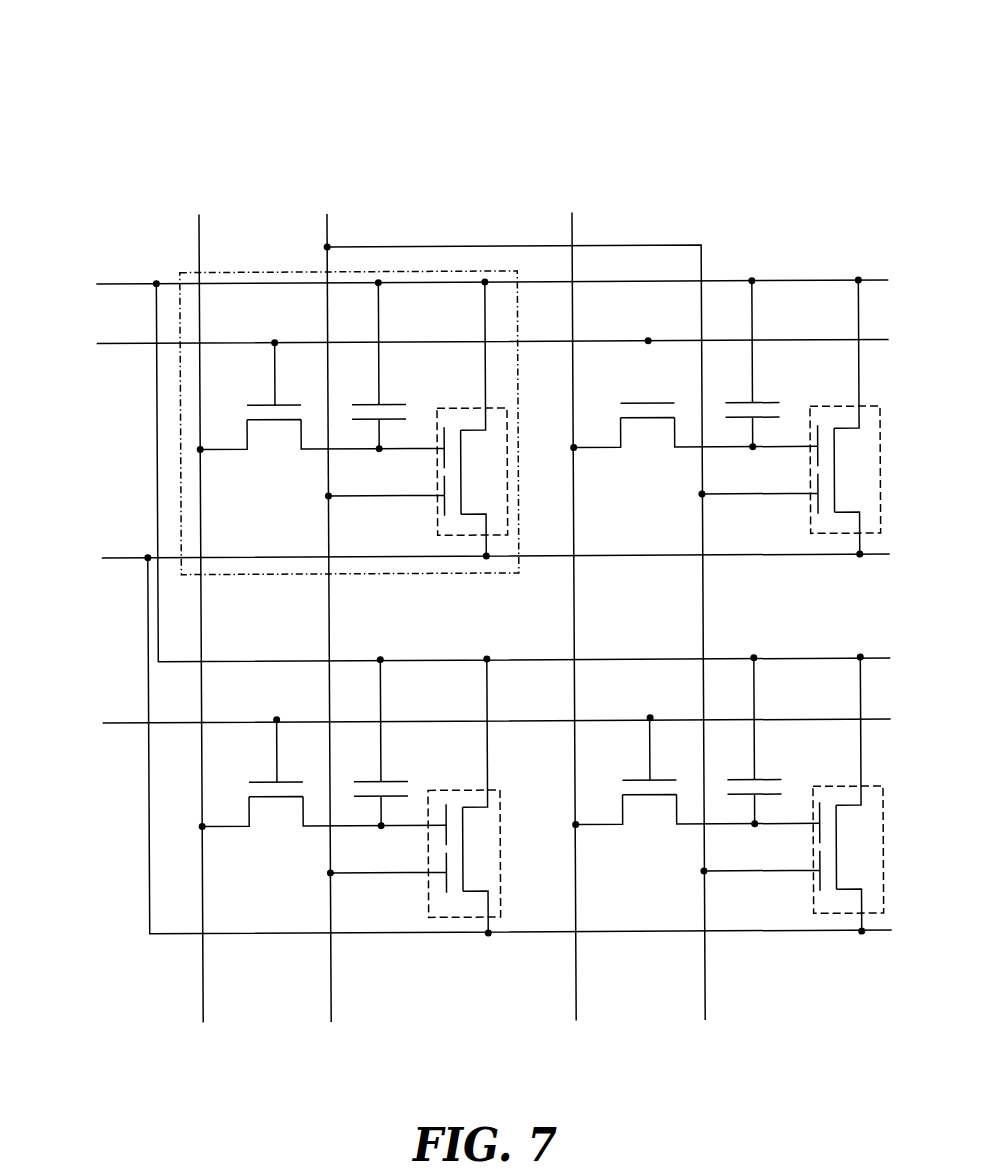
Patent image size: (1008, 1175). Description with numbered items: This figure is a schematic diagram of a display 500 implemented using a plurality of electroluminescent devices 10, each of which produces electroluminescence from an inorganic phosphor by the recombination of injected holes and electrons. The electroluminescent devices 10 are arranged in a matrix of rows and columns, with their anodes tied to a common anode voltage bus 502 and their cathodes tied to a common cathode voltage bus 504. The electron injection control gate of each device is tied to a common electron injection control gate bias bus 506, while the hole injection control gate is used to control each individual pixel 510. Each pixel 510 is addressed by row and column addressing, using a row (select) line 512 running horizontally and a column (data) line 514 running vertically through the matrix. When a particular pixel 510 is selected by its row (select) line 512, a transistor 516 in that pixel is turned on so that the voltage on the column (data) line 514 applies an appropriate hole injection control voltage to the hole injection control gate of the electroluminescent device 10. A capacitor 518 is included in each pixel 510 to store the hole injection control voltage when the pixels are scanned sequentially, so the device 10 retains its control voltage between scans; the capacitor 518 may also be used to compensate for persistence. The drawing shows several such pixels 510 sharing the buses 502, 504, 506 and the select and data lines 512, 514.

The display 500 is at (118, 101).
The common anode voltage bus 502 is at (807, 282).
The common cathode voltage bus 504 is at (150, 651).
The common electron injection control gate bias bus 506 is at (610, 244).
The pixel 510 is at (180, 271).
The row (select) line 512 is at (123, 344).
The column (data) line 514 is at (199, 214).
The transistor 516 is at (263, 433).
The capacitor 518 is at (391, 397).
The electroluminescent device 10 is at (439, 528).